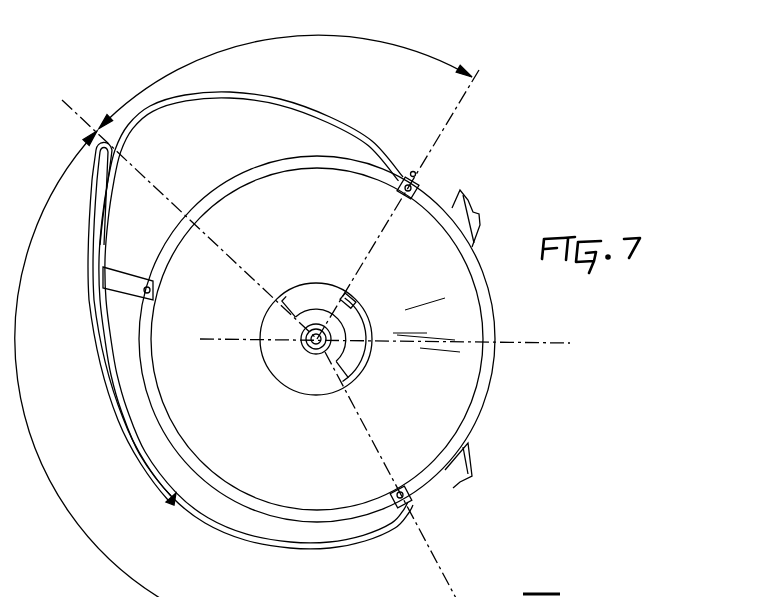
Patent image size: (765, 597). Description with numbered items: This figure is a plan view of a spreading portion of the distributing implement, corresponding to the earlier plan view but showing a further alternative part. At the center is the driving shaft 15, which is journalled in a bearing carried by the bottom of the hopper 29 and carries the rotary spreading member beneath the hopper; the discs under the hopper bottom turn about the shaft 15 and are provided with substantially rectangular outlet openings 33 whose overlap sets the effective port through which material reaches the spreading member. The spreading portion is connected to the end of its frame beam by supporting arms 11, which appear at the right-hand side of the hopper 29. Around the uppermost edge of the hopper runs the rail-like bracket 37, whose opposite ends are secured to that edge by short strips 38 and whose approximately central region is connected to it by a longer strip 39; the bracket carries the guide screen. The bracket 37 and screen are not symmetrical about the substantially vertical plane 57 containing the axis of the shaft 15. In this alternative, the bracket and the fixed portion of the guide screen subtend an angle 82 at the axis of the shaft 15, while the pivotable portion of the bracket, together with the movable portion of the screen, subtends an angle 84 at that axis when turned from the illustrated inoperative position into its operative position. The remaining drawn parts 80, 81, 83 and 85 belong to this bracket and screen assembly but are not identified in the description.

The supporting arms 11 is at (478, 234).
The driving shaft 15 is at (316, 343).
The hopper 29 is at (484, 343).
The outlet openings 33 is at (350, 297).
The rail-like bracket 37 is at (243, 101).
The short strips 38 is at (421, 189).
The longer strip 39 is at (132, 273).
The substantially vertical plane 57 is at (542, 341).
The band outer layer 80 is at (348, 549).
The band inner layer 81 is at (276, 548).
The angle 82 is at (168, 596).
The strap loop 83 is at (88, 232).
The angle 84 is at (250, 48).
The strap end 85 is at (167, 502).